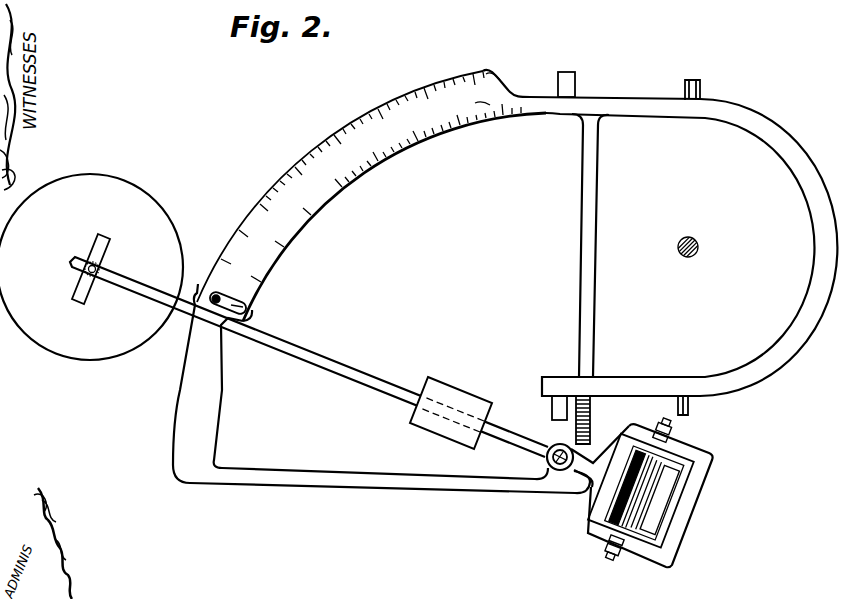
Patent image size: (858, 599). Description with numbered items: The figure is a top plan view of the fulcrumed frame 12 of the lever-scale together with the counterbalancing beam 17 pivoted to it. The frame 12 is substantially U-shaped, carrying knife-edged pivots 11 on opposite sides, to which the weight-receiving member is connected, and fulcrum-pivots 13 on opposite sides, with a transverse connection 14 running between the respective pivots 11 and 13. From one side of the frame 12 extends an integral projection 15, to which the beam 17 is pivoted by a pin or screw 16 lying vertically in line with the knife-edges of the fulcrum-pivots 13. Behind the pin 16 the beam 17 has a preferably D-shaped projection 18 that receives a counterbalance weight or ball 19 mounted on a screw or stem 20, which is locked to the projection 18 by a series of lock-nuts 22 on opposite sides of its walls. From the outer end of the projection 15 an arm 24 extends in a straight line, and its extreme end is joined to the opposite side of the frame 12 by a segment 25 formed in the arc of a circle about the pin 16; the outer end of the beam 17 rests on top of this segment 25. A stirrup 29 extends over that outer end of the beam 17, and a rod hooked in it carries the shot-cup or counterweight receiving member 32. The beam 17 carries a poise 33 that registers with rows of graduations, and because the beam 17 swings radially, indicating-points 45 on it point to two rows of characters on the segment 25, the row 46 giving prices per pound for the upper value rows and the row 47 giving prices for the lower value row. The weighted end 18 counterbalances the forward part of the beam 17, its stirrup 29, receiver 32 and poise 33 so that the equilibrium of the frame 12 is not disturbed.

The knife-edged pivots 11 is at (701, 92).
The frame 12 is at (754, 381).
The fulcrum-pivots 13 is at (572, 78).
The transverse connection 14 is at (600, 170).
The integral projection 15 is at (590, 440).
The pin or screw 16 is at (559, 464).
The weight-counterbalancing beam 17 is at (299, 349).
The D-shaped projection 18 is at (706, 456).
The counterbalance weight 19 is at (658, 485).
The screw or stem 20 is at (713, 458).
The lock-nuts 22 is at (672, 432).
The arm 24 is at (362, 476).
The segment 25 is at (347, 182).
The stirrup 29 is at (107, 243).
The shot-cup or counterweight receiving member 32 is at (91, 267).
The poise 33 is at (446, 391).
The indicating-points 45 is at (210, 292).
The row of characters 46 is at (480, 103).
The row of characters 47 is at (484, 72).